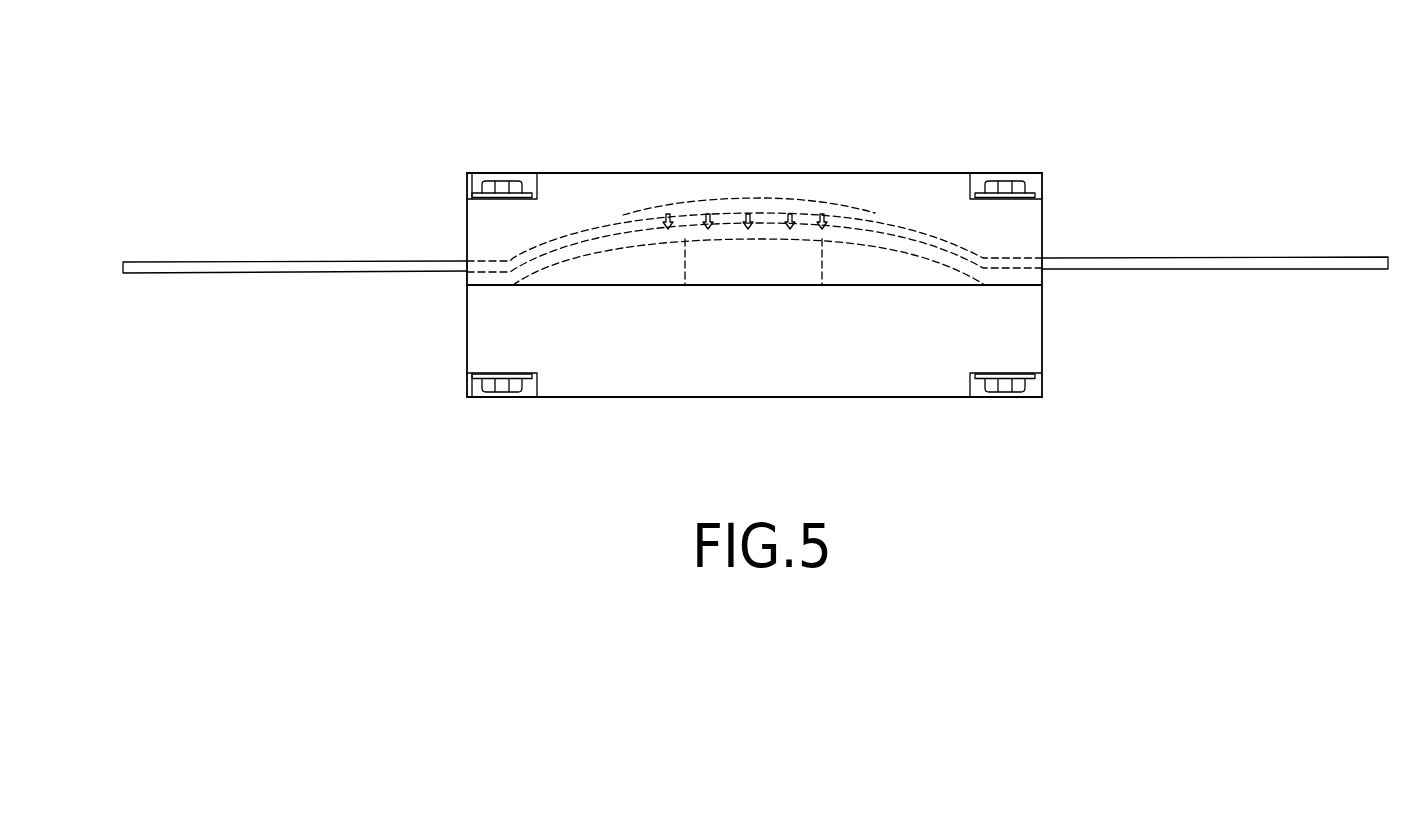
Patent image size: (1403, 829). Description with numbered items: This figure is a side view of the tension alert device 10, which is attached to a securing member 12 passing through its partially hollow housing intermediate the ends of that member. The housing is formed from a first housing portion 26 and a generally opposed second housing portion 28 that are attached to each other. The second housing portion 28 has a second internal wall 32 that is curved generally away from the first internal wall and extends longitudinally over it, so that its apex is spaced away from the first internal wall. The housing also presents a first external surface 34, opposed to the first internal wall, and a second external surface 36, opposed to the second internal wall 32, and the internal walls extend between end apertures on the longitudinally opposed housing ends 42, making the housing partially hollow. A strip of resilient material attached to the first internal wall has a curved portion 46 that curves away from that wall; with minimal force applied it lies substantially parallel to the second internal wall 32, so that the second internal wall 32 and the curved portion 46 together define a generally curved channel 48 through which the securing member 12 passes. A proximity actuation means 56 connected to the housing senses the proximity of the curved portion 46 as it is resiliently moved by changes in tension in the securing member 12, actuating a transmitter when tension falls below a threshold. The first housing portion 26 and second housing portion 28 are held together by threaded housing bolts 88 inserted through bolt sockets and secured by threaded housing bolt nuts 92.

The tension alert device 10 is at (235, 113).
The securing member 12 is at (515, 255).
The first housing portion 26 is at (469, 398).
The second housing portion 28 is at (470, 174).
The second internal wall 32 is at (765, 200).
The first external surface 34 is at (697, 397).
The second external surface 36 is at (673, 172).
The housing ends 42 is at (1042, 223).
The curved portion 46 is at (603, 237).
The curved channel 48 is at (950, 257).
The proximity actuation means 56 is at (731, 265).
The threaded housing bolts 88 is at (503, 182).
The threaded housing bolt nuts 92 is at (500, 393).